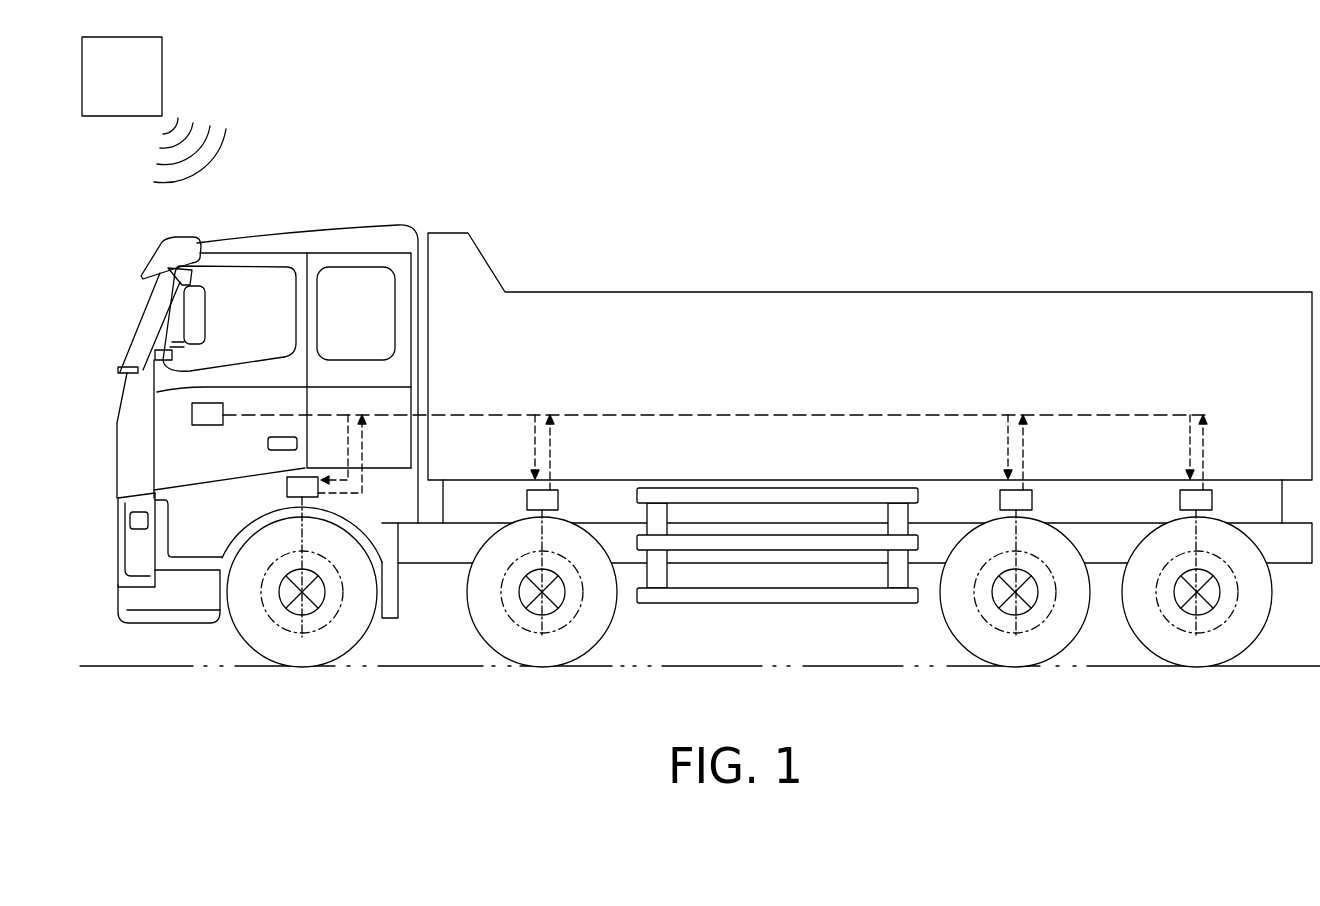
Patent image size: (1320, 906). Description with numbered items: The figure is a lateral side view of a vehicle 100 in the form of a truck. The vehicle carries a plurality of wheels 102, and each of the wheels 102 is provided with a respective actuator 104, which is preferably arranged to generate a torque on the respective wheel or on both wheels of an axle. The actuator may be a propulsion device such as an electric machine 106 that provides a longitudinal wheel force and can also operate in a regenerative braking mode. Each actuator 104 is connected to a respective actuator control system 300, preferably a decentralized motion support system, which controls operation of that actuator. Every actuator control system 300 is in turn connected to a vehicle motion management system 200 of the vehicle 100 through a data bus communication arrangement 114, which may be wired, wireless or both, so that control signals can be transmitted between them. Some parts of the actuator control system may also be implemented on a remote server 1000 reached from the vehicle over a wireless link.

The vehicle 100 is at (753, 150).
The wheels 102 is at (293, 648).
The actuator 104 is at (305, 618).
The electric machine 106 is at (290, 594).
The data bus communication arrangement 114 is at (827, 415).
The vehicle motion management system 200 is at (192, 413).
The actuator control system 300 is at (287, 487).
The remote server 1000 is at (163, 75).